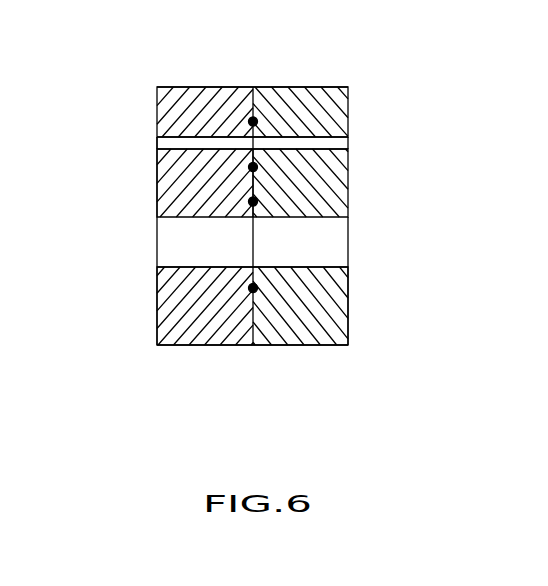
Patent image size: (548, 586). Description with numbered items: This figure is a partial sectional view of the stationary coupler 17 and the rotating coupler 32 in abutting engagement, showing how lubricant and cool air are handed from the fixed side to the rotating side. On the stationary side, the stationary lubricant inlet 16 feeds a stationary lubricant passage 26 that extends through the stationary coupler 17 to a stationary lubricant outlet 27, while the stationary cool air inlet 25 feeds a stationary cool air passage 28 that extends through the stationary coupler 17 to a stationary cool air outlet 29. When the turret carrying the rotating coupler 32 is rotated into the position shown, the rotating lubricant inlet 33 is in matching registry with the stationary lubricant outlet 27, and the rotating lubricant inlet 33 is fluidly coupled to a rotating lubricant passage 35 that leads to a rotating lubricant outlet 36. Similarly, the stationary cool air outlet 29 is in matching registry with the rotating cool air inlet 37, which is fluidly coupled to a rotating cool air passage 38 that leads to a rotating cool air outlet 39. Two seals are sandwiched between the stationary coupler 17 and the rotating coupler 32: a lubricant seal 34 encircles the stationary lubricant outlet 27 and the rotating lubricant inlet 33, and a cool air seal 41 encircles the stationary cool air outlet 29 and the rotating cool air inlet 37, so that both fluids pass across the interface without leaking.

The stationary lubricant inlet 16 is at (337, 147).
The stationary coupler 17 is at (278, 87).
The stationary cool air inlet 25 is at (348, 263).
The stationary lubricant passage 26 is at (348, 165).
The stationary lubricant outlet 27 is at (255, 167).
The stationary cool air passage 28 is at (327, 283).
The stationary cool air outlet 29 is at (315, 315).
The rotating coupler 32 is at (182, 87).
The rotating lubricant inlet 33 is at (157, 183).
The lubricant seal 34 is at (252, 118).
The rotating lubricant passage 35 is at (252, 168).
The rotating lubricant outlet 36 is at (165, 145).
The rotating cool air inlet 37 is at (183, 345).
The rotating cool air passage 38 is at (203, 270).
The rotating cool air outlet 39 is at (158, 267).
The cool air seal 41 is at (256, 201).